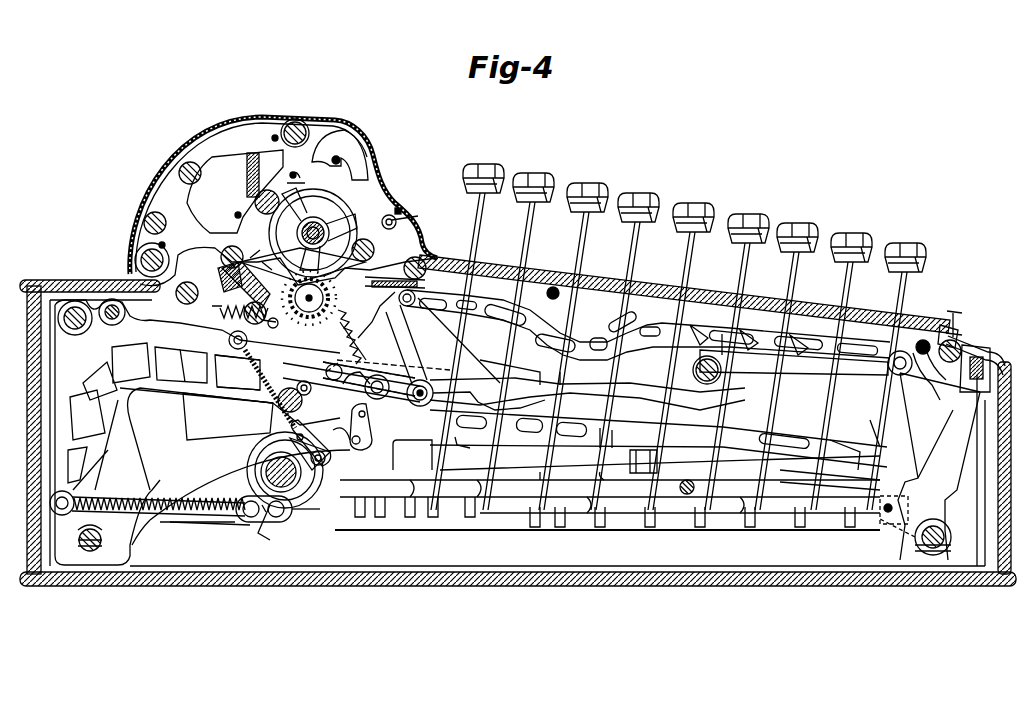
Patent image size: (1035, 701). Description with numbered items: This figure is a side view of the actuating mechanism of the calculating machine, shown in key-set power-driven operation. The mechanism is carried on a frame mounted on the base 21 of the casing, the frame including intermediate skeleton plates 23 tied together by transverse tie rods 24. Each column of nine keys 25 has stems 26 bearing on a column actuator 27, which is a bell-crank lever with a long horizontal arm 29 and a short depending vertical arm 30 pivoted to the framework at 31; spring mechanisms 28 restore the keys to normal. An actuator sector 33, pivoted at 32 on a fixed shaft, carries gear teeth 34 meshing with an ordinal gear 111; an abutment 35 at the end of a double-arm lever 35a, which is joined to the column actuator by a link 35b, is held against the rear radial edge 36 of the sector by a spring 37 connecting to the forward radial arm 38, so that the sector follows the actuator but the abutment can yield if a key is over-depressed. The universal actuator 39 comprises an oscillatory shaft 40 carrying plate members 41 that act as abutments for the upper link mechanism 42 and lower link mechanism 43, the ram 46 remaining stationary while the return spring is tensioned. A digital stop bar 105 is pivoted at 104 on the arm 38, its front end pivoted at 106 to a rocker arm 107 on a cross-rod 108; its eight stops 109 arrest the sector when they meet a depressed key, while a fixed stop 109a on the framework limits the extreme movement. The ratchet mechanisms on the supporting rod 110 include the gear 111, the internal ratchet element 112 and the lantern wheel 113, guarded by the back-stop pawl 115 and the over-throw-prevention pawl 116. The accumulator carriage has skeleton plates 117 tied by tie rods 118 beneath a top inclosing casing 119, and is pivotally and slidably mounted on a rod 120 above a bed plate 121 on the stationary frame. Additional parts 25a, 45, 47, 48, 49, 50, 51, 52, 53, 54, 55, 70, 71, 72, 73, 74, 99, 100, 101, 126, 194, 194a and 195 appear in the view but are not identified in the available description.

The base 21 is at (424, 570).
The intermediate skeleton plates 23 is at (876, 404).
The transverse tie rods 24 is at (912, 546).
The keys 25 is at (745, 214).
The key lever bar 25a is at (668, 300).
The stem 26 is at (795, 270).
The column actuator 27 is at (466, 449).
The spring mechanisms 28 is at (686, 532).
The long horizontal arm 29 is at (858, 450).
The short depending vertical arm 30 is at (108, 432).
The pivot 31 is at (76, 332).
The fixed shaft 32 is at (434, 396).
The actuator sector 33 is at (440, 352).
The gear teeth 34 is at (404, 304).
The abutment 35 is at (360, 392).
The double-arm lever 35a is at (393, 394).
The link 35b is at (370, 450).
The rear radial edge 36 is at (340, 354).
The spring 37 is at (392, 328).
The forward radial arm 38 is at (389, 263).
The universal actuator 39 is at (262, 468).
The power-driven oscillatory shaft 40 is at (262, 474).
The universal actuator plate members 41 is at (286, 470).
The upper link mechanism 42 is at (196, 404).
The lower link mechanism 43 is at (186, 530).
The pin 45 is at (90, 508).
The ram 46 is at (142, 508).
The link 47 is at (252, 518).
The pin 48 is at (276, 520).
The pin 49 is at (286, 518).
The slot 50 is at (237, 364).
The stud 51 is at (228, 337).
The slot 52 is at (238, 380).
The link 53 is at (296, 435).
The pin 54 is at (310, 455).
The lug 55 is at (310, 459).
The plate 70 is at (906, 336).
The bracket 71 is at (950, 325).
The key guide rail 72 is at (566, 272).
The bar 73 is at (627, 383).
The bar 74 is at (660, 391).
The stud 99 is at (920, 364).
The frame bar 100 is at (970, 338).
The screw 101 is at (964, 313).
The pivot 104 is at (453, 312).
The digital stop bar 105 is at (716, 305).
The pivot 106 is at (872, 380).
The rocker arm 107 is at (912, 446).
The cross-rod 108 is at (908, 518).
The stops 109 is at (835, 318).
The fixed stop 109a is at (304, 384).
The supporting rod 110 is at (343, 337).
The gear 111 is at (350, 340).
The internal ratchet element 112 is at (320, 304).
The lantern wheel 113 is at (280, 258).
The back-stop pawl 115 is at (314, 224).
The over-throw-prevention pawl 116 is at (285, 340).
The skeleton plates 117 is at (184, 151).
The transverse tie rods 118 is at (294, 120).
The top inclosing casing 119 is at (212, 133).
The rod 120 is at (136, 256).
The bed plate 121 is at (212, 290).
The slot 126 is at (340, 160).
The stud 194 is at (402, 211).
The arm 194a is at (416, 219).
The roller 195 is at (400, 226).